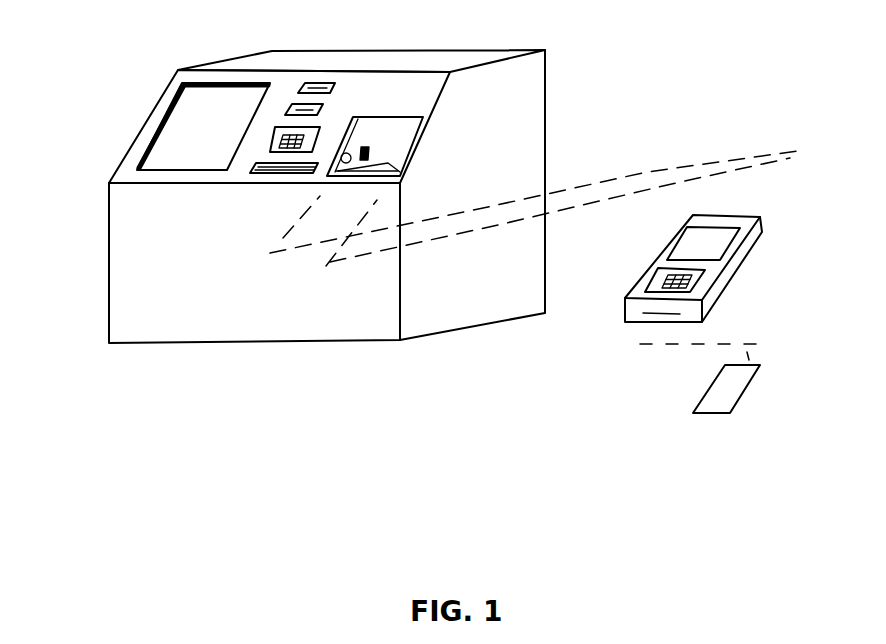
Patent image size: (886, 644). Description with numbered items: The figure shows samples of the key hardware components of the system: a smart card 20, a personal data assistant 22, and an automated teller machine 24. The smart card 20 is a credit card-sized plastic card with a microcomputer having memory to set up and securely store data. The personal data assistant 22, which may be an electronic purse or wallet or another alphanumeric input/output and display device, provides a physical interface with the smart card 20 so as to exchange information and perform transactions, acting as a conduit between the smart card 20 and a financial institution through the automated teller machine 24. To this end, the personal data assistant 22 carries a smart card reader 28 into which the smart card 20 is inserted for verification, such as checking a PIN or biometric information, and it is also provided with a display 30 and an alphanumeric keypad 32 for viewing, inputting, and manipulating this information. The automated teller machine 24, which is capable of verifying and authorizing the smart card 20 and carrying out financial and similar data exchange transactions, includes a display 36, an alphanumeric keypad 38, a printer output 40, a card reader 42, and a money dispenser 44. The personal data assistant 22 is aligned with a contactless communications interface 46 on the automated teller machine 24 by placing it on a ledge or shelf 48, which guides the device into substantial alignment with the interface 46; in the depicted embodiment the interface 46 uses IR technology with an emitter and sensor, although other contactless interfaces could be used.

The smart card 20 is at (741, 392).
The personal data assistant 22 is at (757, 255).
The automated teller machine 24 is at (525, 84).
The smart card reader 28 is at (629, 328).
The display 30 is at (718, 243).
The alphanumeric keypad 32 is at (705, 279).
The display 36 is at (190, 128).
The alphanumeric keypad 38 is at (270, 142).
The printer output 40 is at (325, 83).
The card reader 42 is at (325, 108).
The money dispenser 44 is at (272, 174).
The contactless communications interface 46 is at (378, 152).
The shelf 48 is at (404, 163).